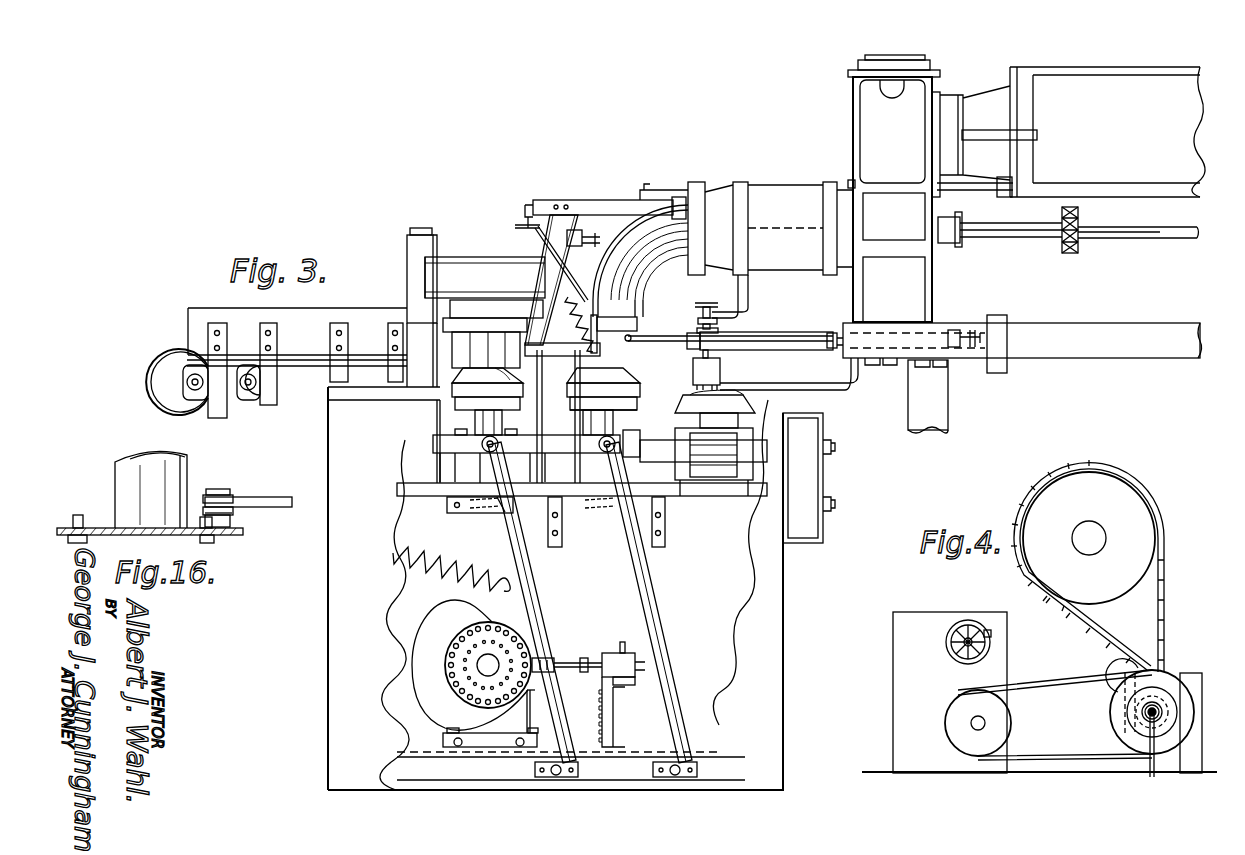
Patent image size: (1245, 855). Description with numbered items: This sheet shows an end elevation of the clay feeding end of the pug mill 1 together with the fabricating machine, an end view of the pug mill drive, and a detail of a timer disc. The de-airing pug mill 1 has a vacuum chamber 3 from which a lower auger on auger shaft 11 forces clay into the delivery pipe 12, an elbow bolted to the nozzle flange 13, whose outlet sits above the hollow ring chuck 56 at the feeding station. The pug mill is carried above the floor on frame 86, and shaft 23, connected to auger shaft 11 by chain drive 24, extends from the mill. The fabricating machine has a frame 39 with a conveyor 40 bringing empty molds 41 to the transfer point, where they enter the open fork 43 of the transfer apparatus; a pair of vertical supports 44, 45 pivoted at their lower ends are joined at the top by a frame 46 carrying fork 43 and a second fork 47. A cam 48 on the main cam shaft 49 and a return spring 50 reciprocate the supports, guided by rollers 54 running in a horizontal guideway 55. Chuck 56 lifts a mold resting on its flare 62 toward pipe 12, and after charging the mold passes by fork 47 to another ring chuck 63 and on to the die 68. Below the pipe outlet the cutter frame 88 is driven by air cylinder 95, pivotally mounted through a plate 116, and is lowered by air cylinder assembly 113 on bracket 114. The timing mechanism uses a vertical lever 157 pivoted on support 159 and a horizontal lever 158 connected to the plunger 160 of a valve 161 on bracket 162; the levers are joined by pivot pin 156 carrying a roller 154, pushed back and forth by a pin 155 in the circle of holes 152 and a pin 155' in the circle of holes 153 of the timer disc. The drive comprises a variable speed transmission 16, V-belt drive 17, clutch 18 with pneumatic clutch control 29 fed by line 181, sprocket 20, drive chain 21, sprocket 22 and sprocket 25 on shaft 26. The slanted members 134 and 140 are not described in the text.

In FIG. 3, the pug mill 1 is at (1107, 63).
In FIG. 3, the vacuum chamber 3 is at (878, 117).
In FIG. 3, the auger shaft 11 is at (1025, 232).
In FIG. 3, the delivery pipe 12 is at (630, 225).
In FIG. 3, the nozzle flange 13 is at (700, 190).
In FIG. 3, the shaft 23 is at (1167, 224).
In FIG. 4, the shaft 23 is at (1135, 700).
In FIG. 3, the chain drive 24 is at (1070, 253).
In FIG. 3, the beam 134 is at (545, 280).
In FIG. 3, the plate 140 is at (545, 320).
In FIG. 3, the die 68 is at (460, 367).
In FIG. 3, the ring chuck 63 is at (468, 398).
In FIG. 3, the molds 41 is at (590, 375).
In FIG. 3, the flare 62 is at (640, 386).
In FIG. 3, the ring chuck 56 is at (637, 405).
In FIG. 3, the conveyor 40 is at (735, 400).
In FIG. 3, the fork 43 is at (584, 432).
In FIG. 3, the vertical support 44 is at (530, 603).
In FIG. 3, the vertical support 45 is at (648, 598).
In FIG. 3, the frame 46 is at (532, 446).
In FIG. 3, the fork 47 is at (470, 445).
In FIG. 3, the rollers 54 is at (470, 510).
In FIG. 3, the guideway 55 is at (575, 520).
In FIG. 3, the return spring 50 is at (440, 555).
In FIG. 3, the cam 48 is at (440, 612).
In FIG. 3, the main cam shaft 49 is at (480, 670).
In FIG. 3, the support 159 is at (490, 718).
In FIG. 3, the lever 158 is at (560, 658).
In FIG. 16, the lever 158 is at (270, 495).
In FIG. 3, the plunger 160 is at (590, 656).
In FIG. 3, the valve 161 is at (630, 680).
In FIG. 3, the bracket 162 is at (600, 690).
In FIG. 3, the lever 157 is at (525, 715).
In FIG. 16, the lever 157 is at (235, 512).
In FIG. 3, the plate 116 is at (713, 303).
In FIG. 3, the cutter frame 88 is at (680, 328).
In FIG. 3, the air cylinder 95 is at (817, 330).
In FIG. 3, the air cylinder assembly 113 is at (720, 365).
In FIG. 3, the bracket 114 is at (860, 392).
In FIG. 3, the frame 86 is at (1060, 358).
In FIG. 3, the frame 39 is at (785, 598).
In FIG. 4, the variable speed transmission 16 is at (900, 690).
In FIG. 4, the V-belt drive 17 is at (1040, 675).
In FIG. 4, the shaft 26 is at (1101, 530).
In FIG. 4, the sprocket 25 is at (1118, 580).
In FIG. 4, the drive chain 21 is at (1168, 645).
In FIG. 4, the sprocket 22 is at (1112, 668).
In FIG. 4, the sprocket 20 is at (1132, 730).
In FIG. 4, the clutch 18 is at (1192, 733).
In FIG. 4, the line 181 is at (1158, 778).
In FIG. 4, the pneumatic clutch control 29 is at (1145, 722).
In FIG. 16, the circle of holes 152 is at (58, 538).
In FIG. 16, the circle of holes 153 is at (100, 520).
In FIG. 16, the pin 155 is at (71, 504).
In FIG. 16, the pin 155' is at (216, 495).
In FIG. 16, the pivot pin 156 is at (227, 487).
In FIG. 16, the roller 154 is at (230, 523).